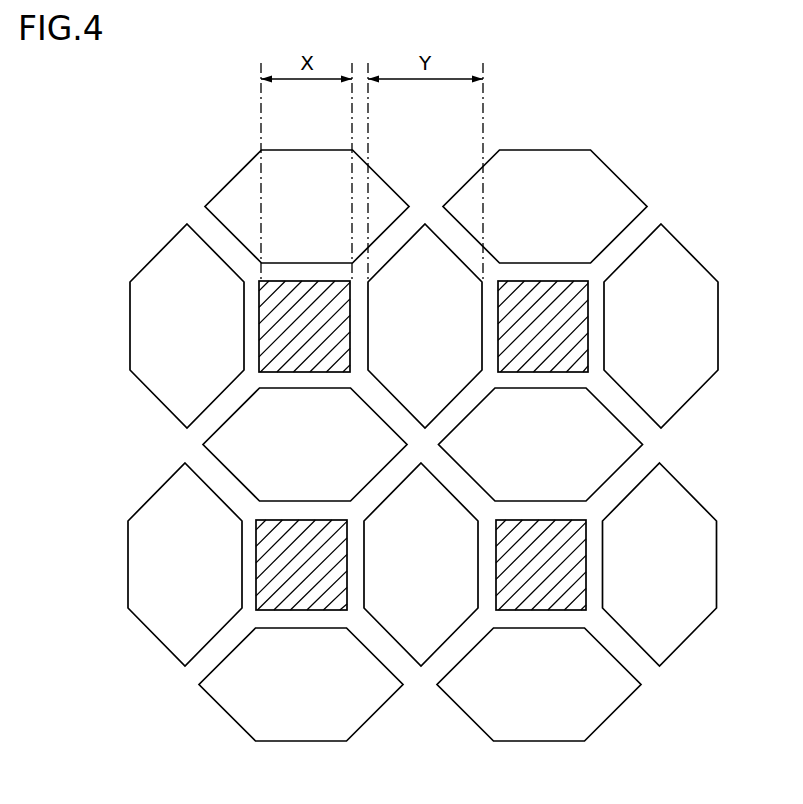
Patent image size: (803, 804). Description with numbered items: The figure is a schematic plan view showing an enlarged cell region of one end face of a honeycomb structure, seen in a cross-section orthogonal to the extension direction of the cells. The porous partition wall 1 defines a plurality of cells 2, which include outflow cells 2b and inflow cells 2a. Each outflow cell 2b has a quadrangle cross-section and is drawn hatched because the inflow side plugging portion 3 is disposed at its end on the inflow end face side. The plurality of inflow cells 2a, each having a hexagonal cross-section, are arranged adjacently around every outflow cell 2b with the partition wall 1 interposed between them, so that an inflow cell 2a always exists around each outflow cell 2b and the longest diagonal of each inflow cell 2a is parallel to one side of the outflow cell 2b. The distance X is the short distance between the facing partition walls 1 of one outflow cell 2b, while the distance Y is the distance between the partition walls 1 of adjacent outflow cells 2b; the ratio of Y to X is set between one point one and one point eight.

The partition wall 1 is at (625, 482).
The cell 2 is at (410, 445).
The inflow cell 2a is at (168, 365).
The outflow cell 2b is at (566, 604).
The inflow side plugging portion 3 is at (278, 311).